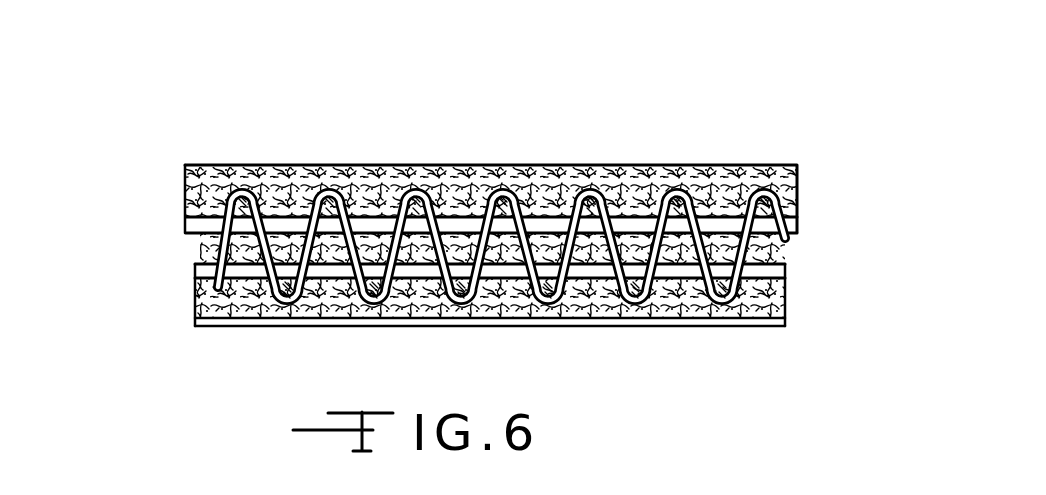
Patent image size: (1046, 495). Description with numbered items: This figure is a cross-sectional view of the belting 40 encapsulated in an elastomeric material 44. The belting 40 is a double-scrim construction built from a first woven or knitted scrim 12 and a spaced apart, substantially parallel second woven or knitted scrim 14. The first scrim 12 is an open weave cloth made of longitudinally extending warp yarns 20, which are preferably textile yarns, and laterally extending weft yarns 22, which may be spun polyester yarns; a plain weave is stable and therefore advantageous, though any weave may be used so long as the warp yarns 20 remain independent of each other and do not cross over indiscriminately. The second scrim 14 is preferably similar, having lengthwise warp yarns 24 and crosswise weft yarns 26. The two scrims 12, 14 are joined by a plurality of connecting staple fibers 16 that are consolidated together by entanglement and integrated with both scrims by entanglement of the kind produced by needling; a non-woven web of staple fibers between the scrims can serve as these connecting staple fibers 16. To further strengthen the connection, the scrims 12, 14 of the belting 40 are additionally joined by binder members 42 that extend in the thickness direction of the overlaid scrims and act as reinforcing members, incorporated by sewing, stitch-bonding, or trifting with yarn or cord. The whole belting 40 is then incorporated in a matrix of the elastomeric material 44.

The belting 40 is at (482, 203).
The first woven or knitted scrim 12 is at (480, 194).
The second woven or knitted scrim 14 is at (482, 307).
The weft yarns 22 is at (730, 197).
The warp yarns 20 is at (797, 223).
The connecting staple fibers 16 is at (782, 250).
The warp yarns 24 is at (787, 272).
The weft yarns 26 is at (733, 320).
The binder members 42 is at (243, 177).
The elastomeric material 44 is at (553, 177).